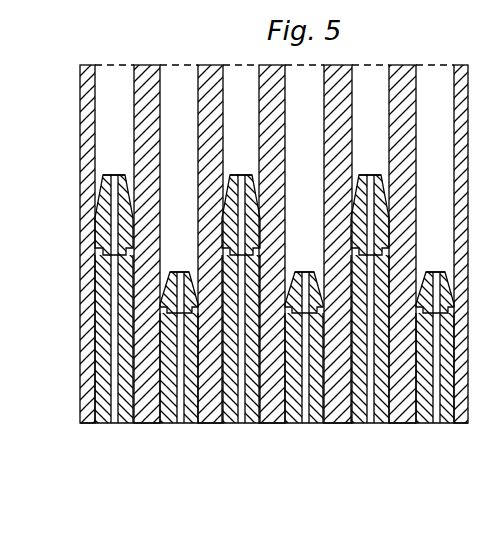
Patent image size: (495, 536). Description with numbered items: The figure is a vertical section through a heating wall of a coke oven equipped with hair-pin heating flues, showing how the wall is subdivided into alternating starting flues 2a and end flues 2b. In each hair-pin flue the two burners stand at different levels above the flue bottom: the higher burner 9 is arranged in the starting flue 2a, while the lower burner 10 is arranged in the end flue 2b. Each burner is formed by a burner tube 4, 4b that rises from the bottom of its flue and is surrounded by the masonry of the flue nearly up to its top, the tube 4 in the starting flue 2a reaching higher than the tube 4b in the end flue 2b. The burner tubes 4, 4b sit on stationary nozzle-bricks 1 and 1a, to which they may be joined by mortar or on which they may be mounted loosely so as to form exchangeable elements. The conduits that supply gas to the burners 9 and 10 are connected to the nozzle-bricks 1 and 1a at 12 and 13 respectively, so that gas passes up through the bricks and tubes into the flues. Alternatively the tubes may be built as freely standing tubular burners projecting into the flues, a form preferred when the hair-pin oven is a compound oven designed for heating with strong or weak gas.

The stationary nozzle-brick 1 is at (100, 387).
The stationary nozzle-brick 1a is at (200, 412).
The starting flue 2a is at (242, 93).
The end flue 2b is at (307, 93).
The burner tube 4 is at (105, 233).
The burner tube 4b is at (160, 307).
The higher burner 9 is at (108, 176).
The lower burner 10 is at (172, 275).
The gas conduit connection 12 is at (115, 412).
The gas conduit connection 13 is at (180, 412).